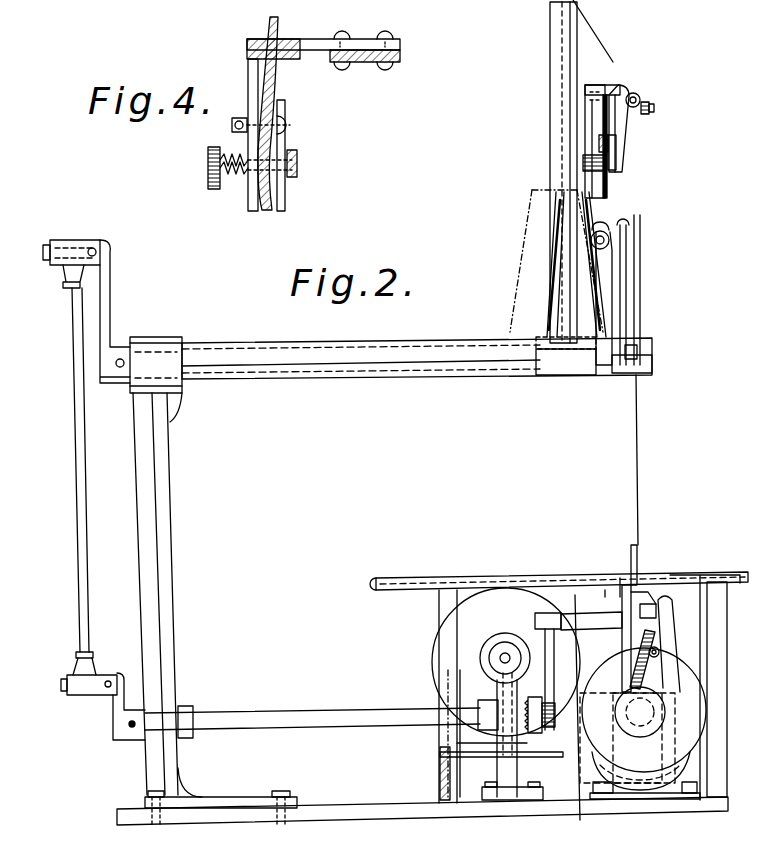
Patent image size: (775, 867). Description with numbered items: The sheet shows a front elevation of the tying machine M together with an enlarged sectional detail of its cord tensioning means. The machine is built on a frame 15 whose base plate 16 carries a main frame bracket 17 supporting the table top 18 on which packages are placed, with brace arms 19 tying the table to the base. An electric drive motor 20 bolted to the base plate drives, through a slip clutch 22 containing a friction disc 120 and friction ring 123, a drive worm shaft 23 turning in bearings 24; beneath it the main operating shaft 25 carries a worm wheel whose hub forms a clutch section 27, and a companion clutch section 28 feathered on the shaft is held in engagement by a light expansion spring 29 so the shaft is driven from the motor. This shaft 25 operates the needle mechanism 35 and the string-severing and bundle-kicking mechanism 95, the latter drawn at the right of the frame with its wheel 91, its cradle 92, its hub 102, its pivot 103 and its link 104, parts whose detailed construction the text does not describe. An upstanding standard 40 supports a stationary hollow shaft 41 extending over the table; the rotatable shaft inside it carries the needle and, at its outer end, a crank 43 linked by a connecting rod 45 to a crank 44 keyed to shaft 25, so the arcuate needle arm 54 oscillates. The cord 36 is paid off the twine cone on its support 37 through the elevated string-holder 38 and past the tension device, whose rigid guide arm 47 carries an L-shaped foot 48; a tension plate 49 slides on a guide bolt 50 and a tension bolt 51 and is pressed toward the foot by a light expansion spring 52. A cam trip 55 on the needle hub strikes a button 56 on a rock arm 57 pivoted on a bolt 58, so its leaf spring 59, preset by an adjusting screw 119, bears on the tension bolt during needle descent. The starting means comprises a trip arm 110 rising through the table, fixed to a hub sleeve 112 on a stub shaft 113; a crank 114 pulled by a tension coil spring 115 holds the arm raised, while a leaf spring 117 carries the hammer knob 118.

In FIG. 4, the cord 36 is at (270, 26).
In FIG. 2, the cord 36 is at (640, 522).
In FIG. 4, the L-shaped foot 48 is at (308, 40).
In FIG. 2, the L-shaped foot 48 is at (612, 85).
In FIG. 4, the rigid guide arm 47 is at (362, 63).
In FIG. 2, the rigid guide arm 47 is at (582, 112).
In FIG. 4, the tension plate 49 is at (284, 104).
In FIG. 2, the tension plate 49 is at (619, 128).
In FIG. 4, the guide bolt 50 is at (240, 118).
In FIG. 4, the tension bolt 51 is at (258, 212).
In FIG. 2, the tension bolt 51 is at (650, 112).
In FIG. 4, the light expansion spring 52 is at (232, 178).
In FIG. 2, the light expansion spring 52 is at (641, 96).
In FIG. 4, the leaf spring 59 is at (296, 176).
In FIG. 2, the leaf spring 59 is at (624, 130).
In FIG. 2, the string-holder 38 is at (551, 48).
In FIG. 2, the adjusting screw 119 is at (598, 143).
In FIG. 2, the bolt 58 is at (610, 240).
In FIG. 2, the support for the cone or ball of twine 37 is at (548, 300).
In FIG. 2, the rock arm 57 is at (614, 268).
In FIG. 2, the cam trip 55 is at (626, 300).
In FIG. 2, the needle mechanism 35 is at (642, 312).
In FIG. 2, the arcuate needle arm 54 is at (652, 338).
In FIG. 2, the button 56 is at (624, 378).
In FIG. 2, the stationary hollow shaft 41 is at (398, 345).
In FIG. 2, the upstanding standard 40 is at (158, 570).
In FIG. 2, the tying machine M is at (188, 527).
In FIG. 2, the crank 43 is at (108, 335).
In FIG. 2, the connecting rod 45 is at (76, 512).
In FIG. 2, the crank 44 is at (116, 725).
In FIG. 2, the main operating shaft 25 is at (265, 712).
In FIG. 2, the table top 18 is at (425, 580).
In FIG. 2, the brace arms 19 is at (712, 648).
In FIG. 2, the base plate 16 is at (350, 815).
In FIG. 2, the electric drive motor 20 is at (506, 662).
In FIG. 2, the slip clutch 22 is at (484, 645).
In FIG. 2, the drive worm shaft 23 is at (503, 658).
In FIG. 2, the clutch section 27 is at (492, 702).
In FIG. 2, the companion clutch section 28 is at (546, 700).
In FIG. 2, the light expansion spring 29 is at (566, 715).
In FIG. 2, the bearings 24 is at (505, 772).
In FIG. 2, the leaf spring 117 is at (560, 660).
In FIG. 2, the tension coil spring 115 is at (650, 626).
In FIG. 2, the hub sleeve 112 is at (585, 605).
In FIG. 2, the trip arm 110 is at (642, 552).
In FIG. 2, the string-severing and bundle-kicking mechanism 95 is at (690, 572).
In FIG. 2, the crank 114 is at (652, 612).
In FIG. 2, the stub shaft 113 is at (658, 618).
In FIG. 2, the link 104 is at (680, 638).
In FIG. 2, the pivot 103 is at (661, 654).
In FIG. 2, the hub 102 is at (670, 690).
In FIG. 2, the wheel 91 is at (690, 716).
In FIG. 2, the bearing 92 is at (633, 788).
In FIG. 2, the main frame bracket 17 is at (682, 796).
In FIG. 2, the frame 15 is at (526, 808).
In FIG. 2, the hammer knob 118 is at (584, 730).
In FIG. 2, the friction disc 120 is at (262, 866).
In FIG. 2, the friction ring 123 is at (316, 866).